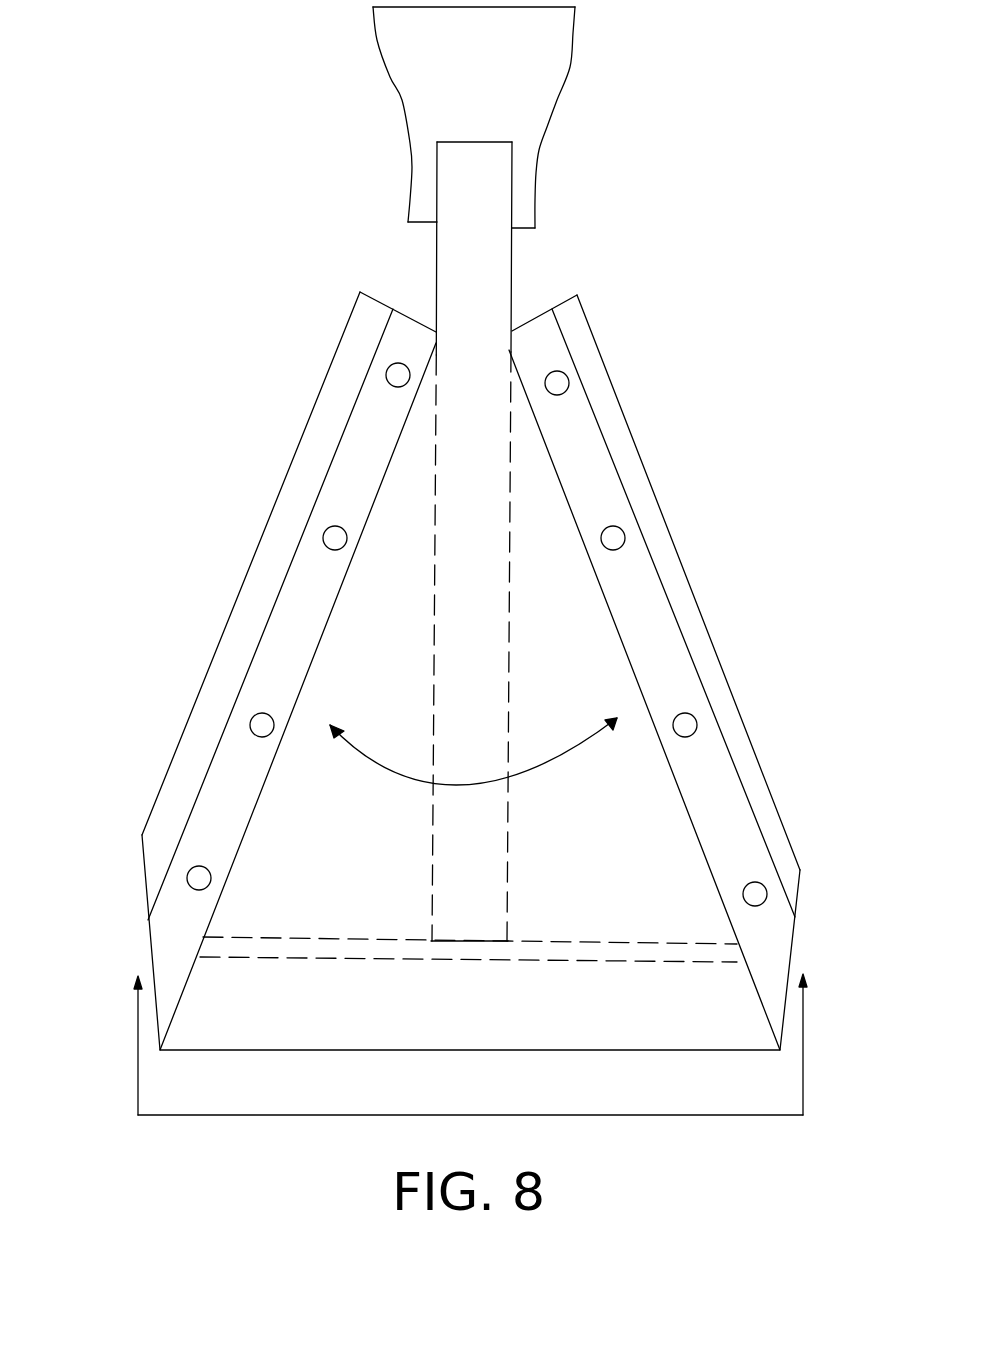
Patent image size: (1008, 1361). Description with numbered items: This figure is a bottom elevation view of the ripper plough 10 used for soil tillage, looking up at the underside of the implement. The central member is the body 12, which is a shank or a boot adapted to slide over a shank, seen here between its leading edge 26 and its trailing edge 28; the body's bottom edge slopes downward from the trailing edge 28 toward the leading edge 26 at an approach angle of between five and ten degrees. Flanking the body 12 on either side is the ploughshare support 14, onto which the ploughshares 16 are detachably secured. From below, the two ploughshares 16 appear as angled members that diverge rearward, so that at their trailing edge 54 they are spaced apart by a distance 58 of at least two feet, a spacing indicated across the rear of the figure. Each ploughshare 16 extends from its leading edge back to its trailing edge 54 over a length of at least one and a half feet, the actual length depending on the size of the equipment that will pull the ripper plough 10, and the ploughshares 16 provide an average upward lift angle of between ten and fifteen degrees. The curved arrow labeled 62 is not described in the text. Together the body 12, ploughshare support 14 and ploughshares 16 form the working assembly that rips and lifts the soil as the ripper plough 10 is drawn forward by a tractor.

The ripper plough 10 is at (168, 106).
The body 12 is at (512, 302).
The ploughshare support 14 is at (592, 478).
The ploughshares 16 is at (308, 417).
The leading edge 26 is at (472, 142).
The trailing edge 28 is at (470, 941).
The trailing edge 54 is at (150, 914).
The distance 58 is at (452, 1115).
The pivoting direction 62 is at (468, 787).